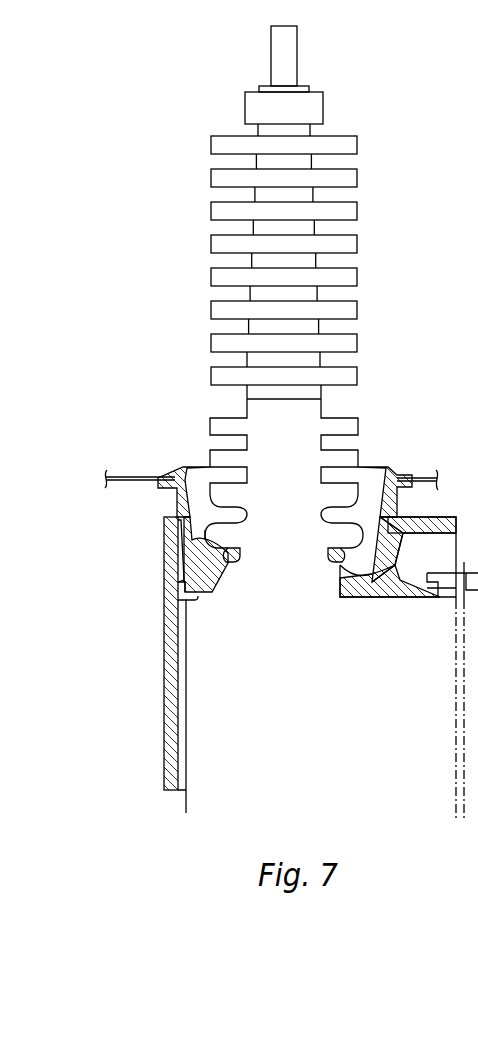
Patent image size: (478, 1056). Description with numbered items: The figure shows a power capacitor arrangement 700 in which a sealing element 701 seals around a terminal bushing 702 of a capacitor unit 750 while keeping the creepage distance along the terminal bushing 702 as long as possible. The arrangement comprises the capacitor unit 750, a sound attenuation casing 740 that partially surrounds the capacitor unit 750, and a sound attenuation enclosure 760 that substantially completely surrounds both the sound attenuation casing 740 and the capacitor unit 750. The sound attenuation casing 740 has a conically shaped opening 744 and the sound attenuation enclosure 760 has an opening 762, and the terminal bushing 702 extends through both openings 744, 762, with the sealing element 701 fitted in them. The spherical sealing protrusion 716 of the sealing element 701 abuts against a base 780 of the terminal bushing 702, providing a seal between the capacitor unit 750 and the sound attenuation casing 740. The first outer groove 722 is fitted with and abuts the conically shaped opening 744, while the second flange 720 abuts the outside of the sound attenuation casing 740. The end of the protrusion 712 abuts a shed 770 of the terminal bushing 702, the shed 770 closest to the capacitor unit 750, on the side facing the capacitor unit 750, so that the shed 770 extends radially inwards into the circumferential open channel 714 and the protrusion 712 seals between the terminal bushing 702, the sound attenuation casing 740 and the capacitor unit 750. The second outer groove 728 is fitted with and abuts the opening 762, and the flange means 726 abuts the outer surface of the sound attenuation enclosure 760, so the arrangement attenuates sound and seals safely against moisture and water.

The power capacitor arrangement 700 is at (175, 361).
The terminal bushing 702 is at (212, 147).
The sealing element 701 is at (170, 476).
The second outer groove 728 is at (184, 467).
The opening 762 is at (173, 478).
The sound attenuation enclosure 760 is at (122, 480).
The opening 744 is at (165, 537).
The sound attenuation casing 740 is at (172, 552).
The shed 770 is at (228, 538).
The protrusion 712 is at (240, 555).
The spherical sealing protrusion 716 is at (213, 590).
The base 780 is at (198, 600).
The circumferential open channel 714 is at (357, 548).
The flange means 726 is at (403, 472).
The second flange 720 is at (395, 515).
The first outer groove 722 is at (390, 555).
The capacitor unit 750 is at (336, 732).